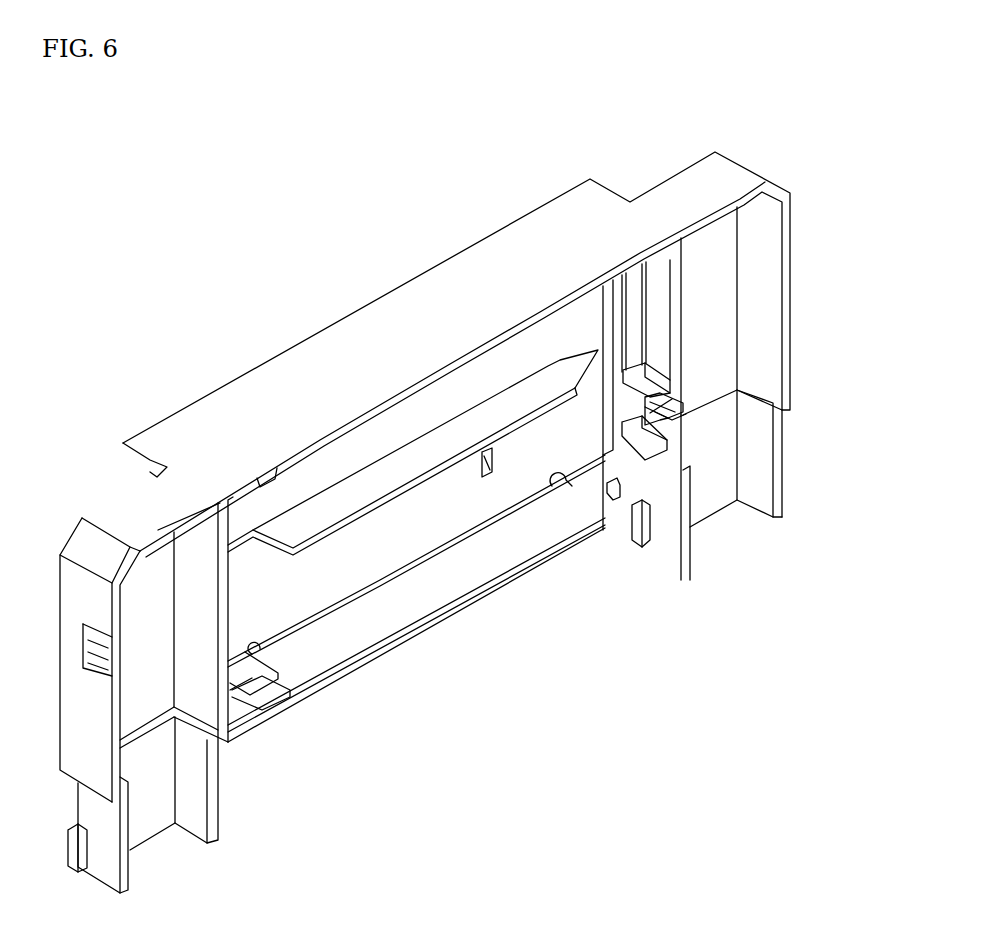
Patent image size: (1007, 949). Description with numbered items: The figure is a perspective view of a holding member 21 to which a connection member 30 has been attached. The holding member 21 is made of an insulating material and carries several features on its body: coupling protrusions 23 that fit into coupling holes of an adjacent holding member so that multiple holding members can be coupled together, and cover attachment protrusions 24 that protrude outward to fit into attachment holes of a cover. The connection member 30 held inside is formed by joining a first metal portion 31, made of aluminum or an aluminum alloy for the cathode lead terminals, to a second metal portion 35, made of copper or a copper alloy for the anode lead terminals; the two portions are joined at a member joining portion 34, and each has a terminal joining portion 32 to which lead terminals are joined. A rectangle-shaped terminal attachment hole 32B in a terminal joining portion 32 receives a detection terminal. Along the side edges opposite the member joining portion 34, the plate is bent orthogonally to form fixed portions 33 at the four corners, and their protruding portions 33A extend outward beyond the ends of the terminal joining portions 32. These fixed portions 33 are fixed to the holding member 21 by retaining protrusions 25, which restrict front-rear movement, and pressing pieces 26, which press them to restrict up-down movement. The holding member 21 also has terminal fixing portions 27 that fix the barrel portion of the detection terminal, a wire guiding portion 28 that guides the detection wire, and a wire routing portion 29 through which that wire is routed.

The holding member 21 is at (674, 192).
The coupling protrusion 23 is at (634, 523).
The cover attachment protrusion 24 is at (90, 630).
The retaining protrusion 25 is at (604, 490).
The pressing piece 26 is at (662, 455).
The terminal fixing portion 27 is at (670, 417).
The wire guiding portion 28 is at (668, 404).
The wire routing portion 29 is at (713, 497).
The connection member 30 is at (416, 443).
The first metal portion 31 is at (413, 408).
The terminal joining portion 32 is at (432, 410).
The terminal attachment hole 32B is at (487, 478).
The fixed portion 33 is at (473, 598).
The protruding portion 33A is at (665, 460).
The member joining portion 34 is at (330, 580).
The second metal portion 35 is at (354, 604).